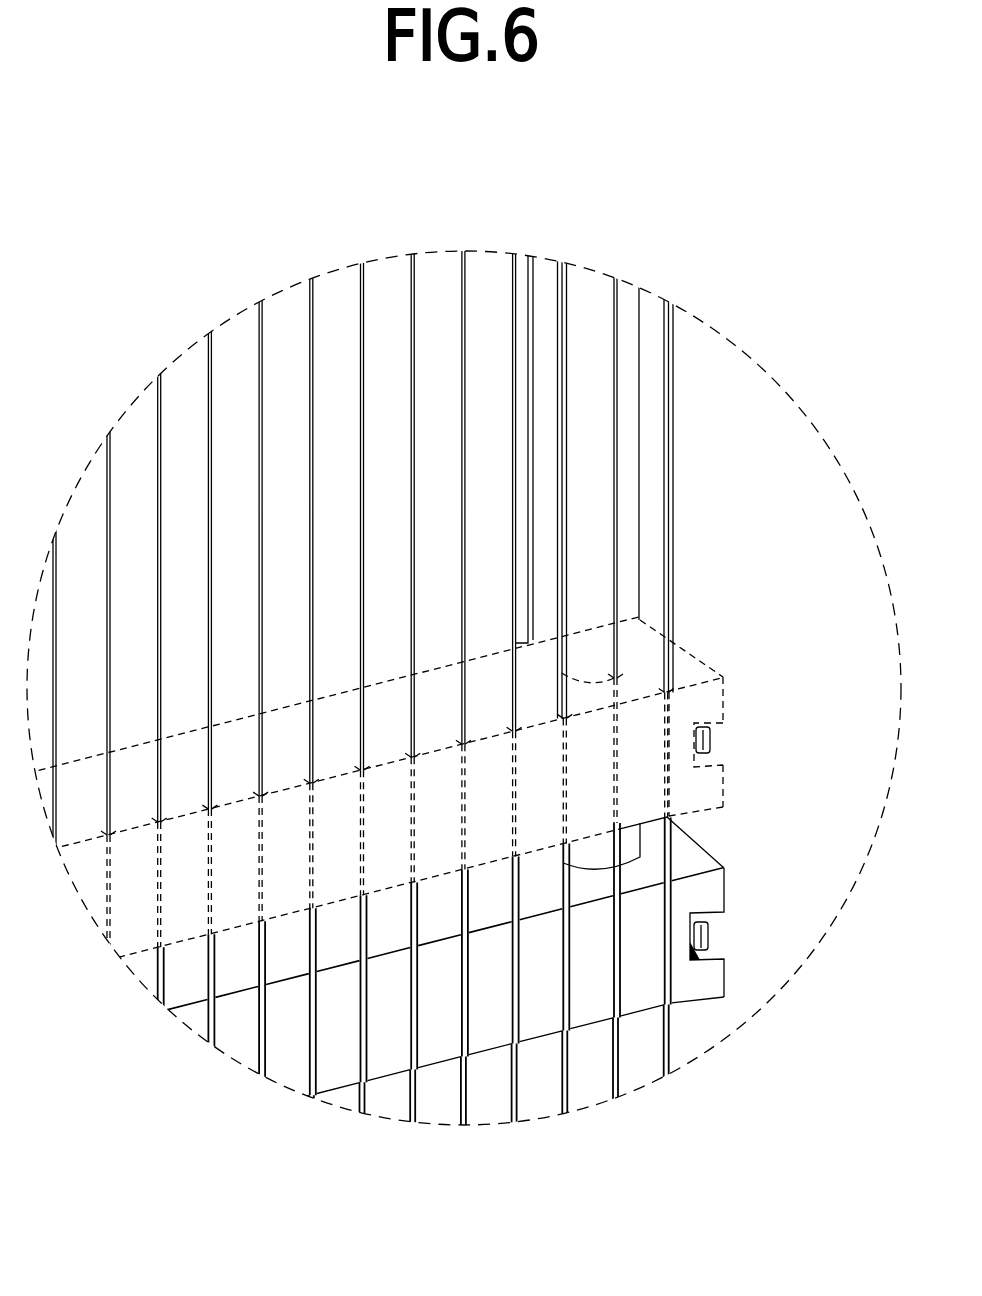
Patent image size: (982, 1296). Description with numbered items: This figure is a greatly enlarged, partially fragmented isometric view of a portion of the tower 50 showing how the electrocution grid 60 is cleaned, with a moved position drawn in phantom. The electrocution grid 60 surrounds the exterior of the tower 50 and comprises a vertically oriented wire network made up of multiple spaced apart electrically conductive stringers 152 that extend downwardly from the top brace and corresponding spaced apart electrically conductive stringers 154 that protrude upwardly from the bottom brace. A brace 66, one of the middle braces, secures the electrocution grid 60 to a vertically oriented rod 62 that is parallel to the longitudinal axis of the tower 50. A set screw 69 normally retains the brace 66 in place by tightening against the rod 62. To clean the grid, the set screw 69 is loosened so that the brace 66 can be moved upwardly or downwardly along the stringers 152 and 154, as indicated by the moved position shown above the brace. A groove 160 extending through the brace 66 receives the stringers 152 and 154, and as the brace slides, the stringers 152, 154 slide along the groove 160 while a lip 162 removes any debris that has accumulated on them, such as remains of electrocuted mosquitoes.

The tower 50 is at (130, 458).
The electrocution grid 60 is at (682, 452).
The rod 62 is at (627, 602).
The brace 66 is at (723, 700).
The set screw 69 is at (710, 740).
The stringer 152 is at (667, 544).
The stringer 154 is at (615, 507).
The groove 160 is at (629, 728).
The lip 162 is at (625, 676).